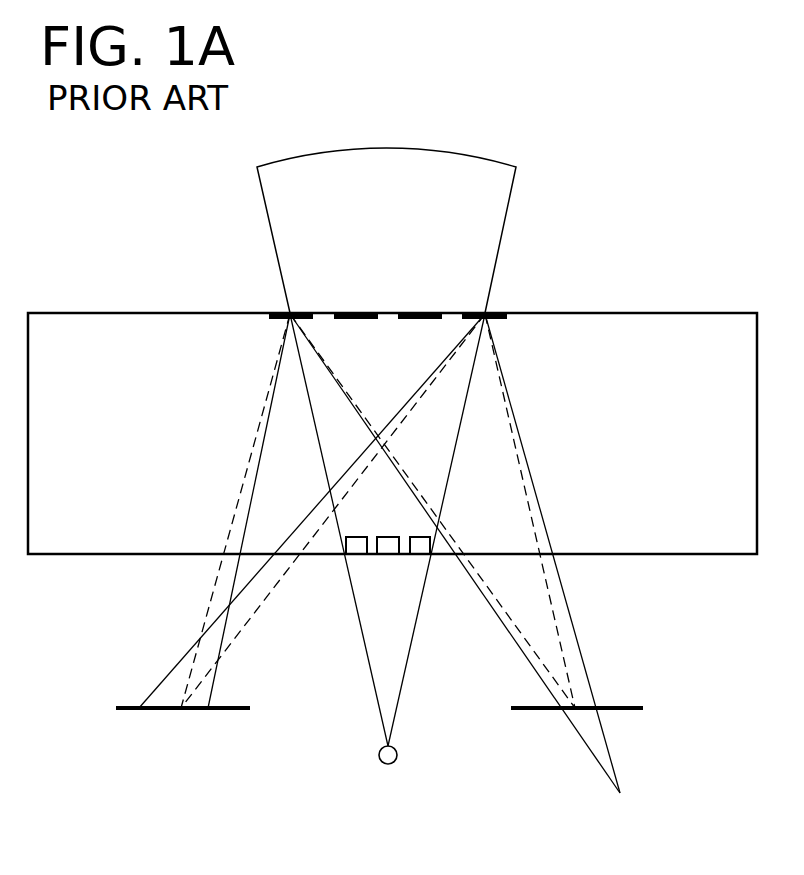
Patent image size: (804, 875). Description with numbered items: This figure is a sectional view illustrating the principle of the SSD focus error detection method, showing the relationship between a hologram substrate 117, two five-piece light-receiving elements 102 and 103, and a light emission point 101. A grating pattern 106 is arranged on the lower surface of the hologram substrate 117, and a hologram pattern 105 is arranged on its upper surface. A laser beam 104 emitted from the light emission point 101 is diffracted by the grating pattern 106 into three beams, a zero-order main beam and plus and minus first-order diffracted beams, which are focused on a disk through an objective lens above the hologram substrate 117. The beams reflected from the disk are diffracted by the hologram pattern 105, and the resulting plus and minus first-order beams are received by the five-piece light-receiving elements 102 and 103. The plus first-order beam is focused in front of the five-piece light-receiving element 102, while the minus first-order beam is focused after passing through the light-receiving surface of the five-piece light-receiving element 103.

The light emission point 101 is at (384, 764).
The five-piece light-receiving element 102 is at (162, 710).
The five-piece light-receiving element 103 is at (628, 706).
The laser beam 104 is at (373, 148).
The hologram pattern 105 is at (496, 312).
The grating pattern 106 is at (417, 537).
The hologram substrate 117 is at (110, 312).